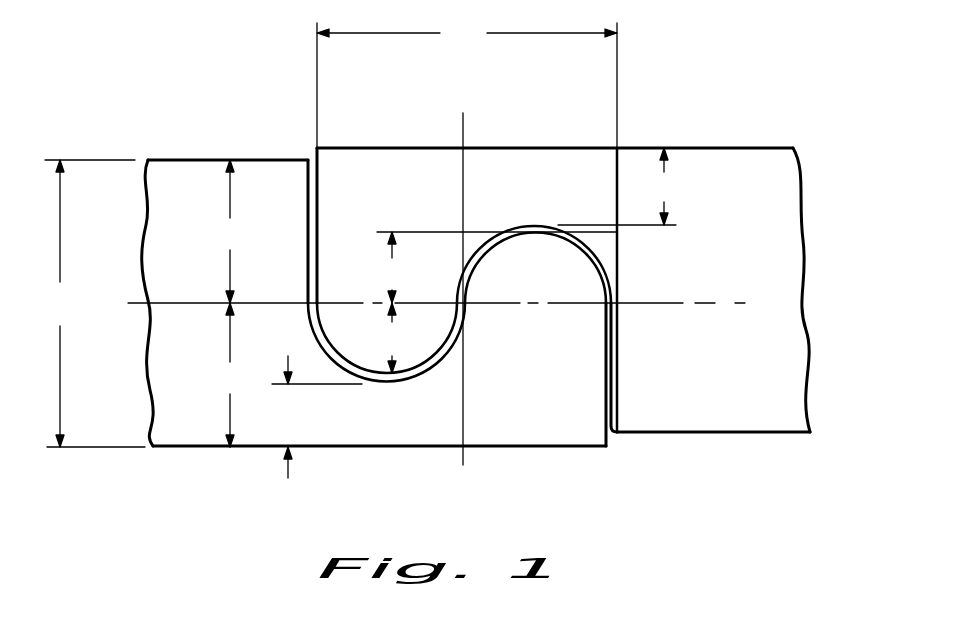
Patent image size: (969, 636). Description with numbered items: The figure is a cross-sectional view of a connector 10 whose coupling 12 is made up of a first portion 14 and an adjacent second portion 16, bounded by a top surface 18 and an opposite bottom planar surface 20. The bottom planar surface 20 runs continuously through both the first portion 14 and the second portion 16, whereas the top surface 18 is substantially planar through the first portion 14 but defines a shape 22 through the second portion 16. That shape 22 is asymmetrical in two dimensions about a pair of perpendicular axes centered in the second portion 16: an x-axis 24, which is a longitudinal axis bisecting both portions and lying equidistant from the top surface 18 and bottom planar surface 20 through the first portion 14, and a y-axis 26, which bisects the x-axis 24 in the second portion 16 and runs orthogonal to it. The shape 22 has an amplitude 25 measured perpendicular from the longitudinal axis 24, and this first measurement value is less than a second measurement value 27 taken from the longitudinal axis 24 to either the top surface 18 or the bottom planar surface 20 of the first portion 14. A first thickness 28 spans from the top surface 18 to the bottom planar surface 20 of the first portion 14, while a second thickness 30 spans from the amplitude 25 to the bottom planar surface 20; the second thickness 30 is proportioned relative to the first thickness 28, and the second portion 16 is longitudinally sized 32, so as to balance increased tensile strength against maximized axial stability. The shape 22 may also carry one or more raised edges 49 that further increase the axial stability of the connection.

The connector 10 is at (172, 122).
The coupling 12 is at (259, 158).
The first portion 14 is at (752, 163).
The second portion 16 is at (372, 165).
The top surface 18 is at (199, 158).
The bottom planar surface 20 is at (263, 450).
The shape 22 is at (456, 269).
The x-axis 24 is at (436, 303).
The amplitude 25 is at (496, 302).
The y-axis 26 is at (462, 291).
The second measurement value 27 is at (229, 303).
The first thickness 28 is at (92, 303).
The second thickness 30 is at (476, 313).
The longitudinal size 32 is at (467, 83).
The raised edges 49 is at (461, 327).